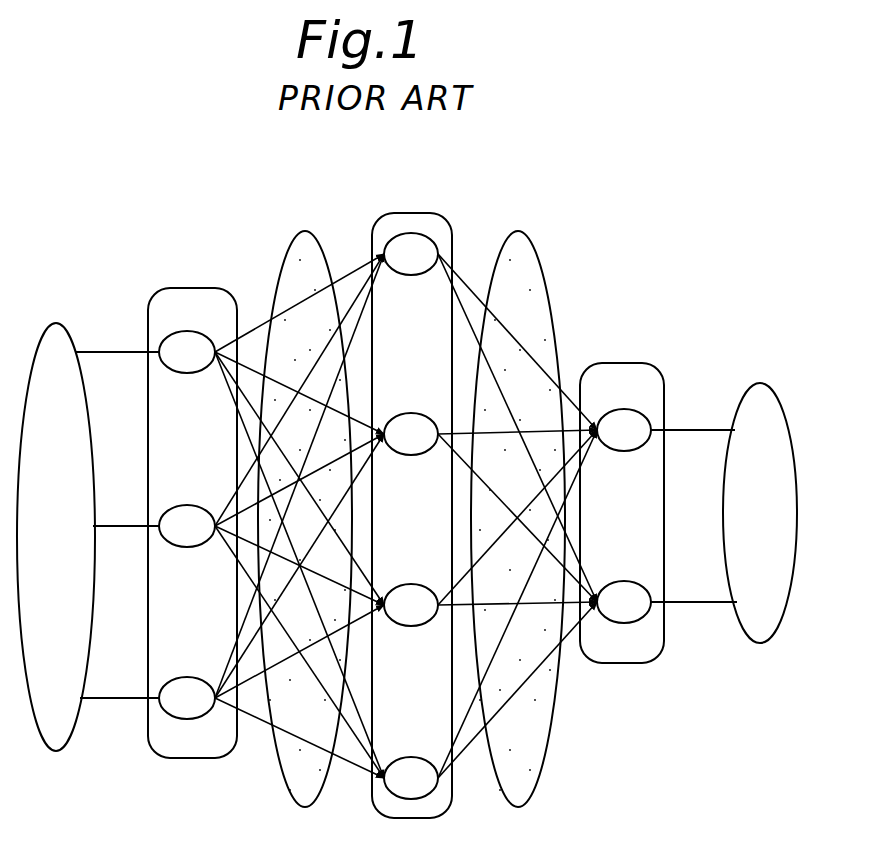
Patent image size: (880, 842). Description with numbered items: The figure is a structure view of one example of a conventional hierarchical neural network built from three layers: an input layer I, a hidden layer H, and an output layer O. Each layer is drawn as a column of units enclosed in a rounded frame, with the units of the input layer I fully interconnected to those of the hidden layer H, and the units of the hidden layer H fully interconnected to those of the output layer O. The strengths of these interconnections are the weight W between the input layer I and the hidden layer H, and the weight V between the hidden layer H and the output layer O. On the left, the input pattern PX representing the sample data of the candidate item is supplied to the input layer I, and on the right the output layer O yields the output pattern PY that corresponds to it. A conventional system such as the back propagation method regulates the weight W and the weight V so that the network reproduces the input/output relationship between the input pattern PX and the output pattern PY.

The input pattern PX is at (57, 325).
The input layer I is at (184, 287).
The weight W is at (304, 232).
The hidden layer H is at (430, 213).
The weight V is at (525, 232).
The output layer O is at (637, 363).
The output pattern PY is at (747, 382).